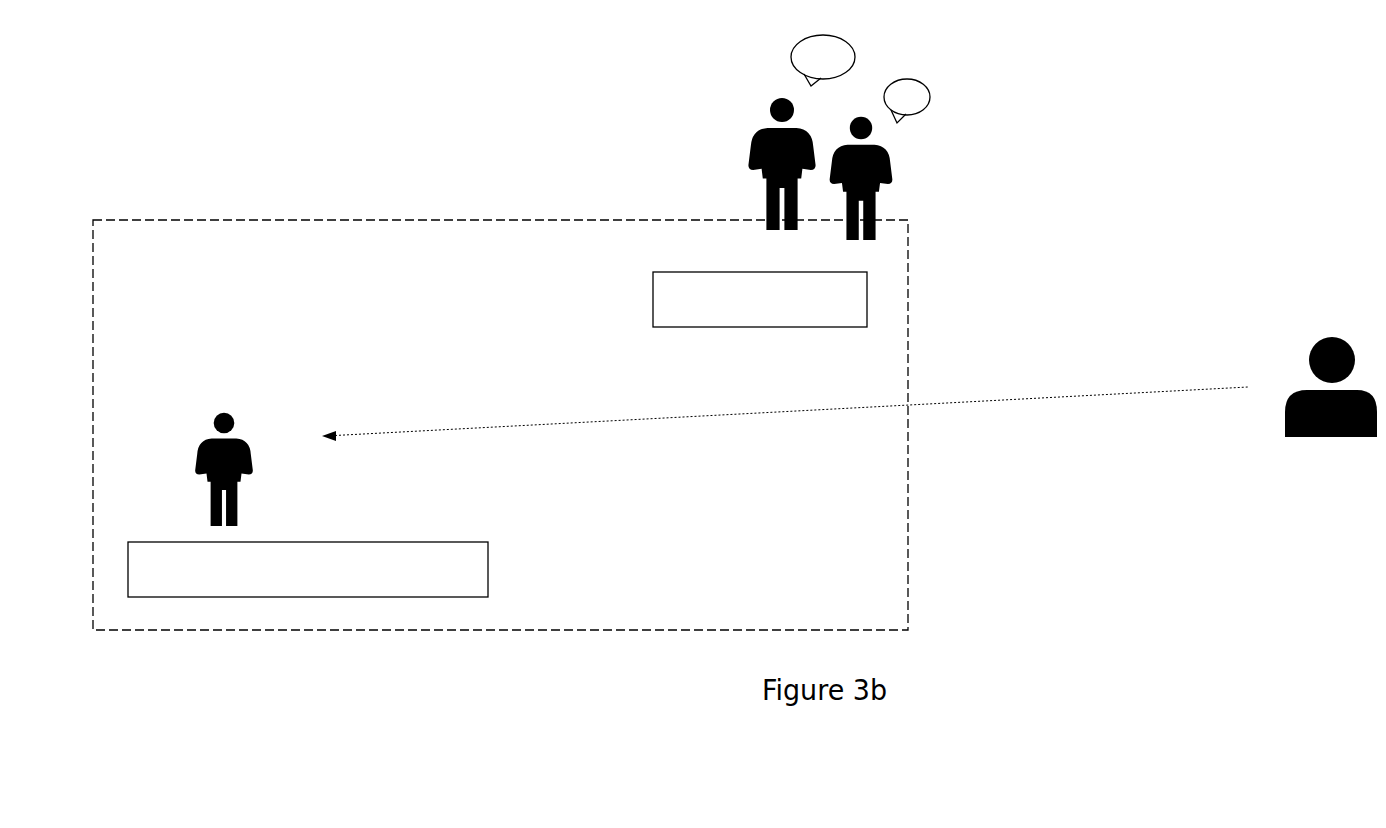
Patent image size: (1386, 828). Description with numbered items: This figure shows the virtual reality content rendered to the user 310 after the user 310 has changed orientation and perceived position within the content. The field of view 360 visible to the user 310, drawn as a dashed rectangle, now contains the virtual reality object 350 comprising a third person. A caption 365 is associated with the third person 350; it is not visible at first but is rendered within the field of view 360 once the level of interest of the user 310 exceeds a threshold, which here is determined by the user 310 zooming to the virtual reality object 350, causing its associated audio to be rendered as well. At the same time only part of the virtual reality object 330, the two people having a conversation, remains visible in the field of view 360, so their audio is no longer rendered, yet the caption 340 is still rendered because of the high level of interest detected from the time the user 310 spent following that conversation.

The user 310 is at (1331, 412).
The virtual reality object 330 is at (818, 137).
The caption 340 is at (733, 299).
The virtual reality object 350 is at (199, 469).
The field of view 360 is at (500, 399).
The caption 365 is at (334, 569).